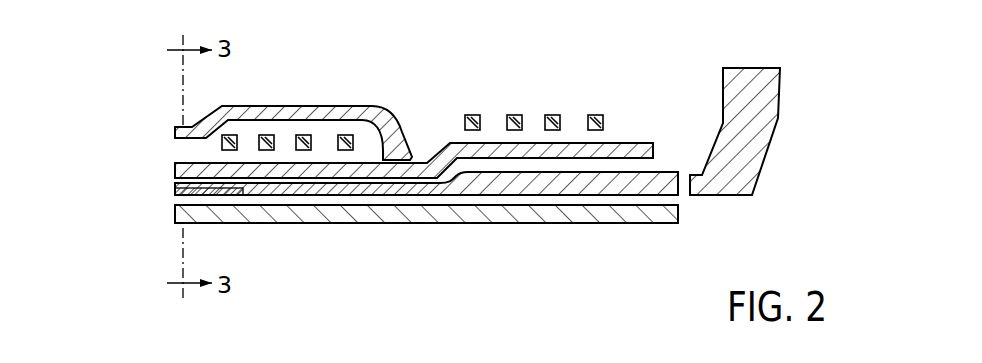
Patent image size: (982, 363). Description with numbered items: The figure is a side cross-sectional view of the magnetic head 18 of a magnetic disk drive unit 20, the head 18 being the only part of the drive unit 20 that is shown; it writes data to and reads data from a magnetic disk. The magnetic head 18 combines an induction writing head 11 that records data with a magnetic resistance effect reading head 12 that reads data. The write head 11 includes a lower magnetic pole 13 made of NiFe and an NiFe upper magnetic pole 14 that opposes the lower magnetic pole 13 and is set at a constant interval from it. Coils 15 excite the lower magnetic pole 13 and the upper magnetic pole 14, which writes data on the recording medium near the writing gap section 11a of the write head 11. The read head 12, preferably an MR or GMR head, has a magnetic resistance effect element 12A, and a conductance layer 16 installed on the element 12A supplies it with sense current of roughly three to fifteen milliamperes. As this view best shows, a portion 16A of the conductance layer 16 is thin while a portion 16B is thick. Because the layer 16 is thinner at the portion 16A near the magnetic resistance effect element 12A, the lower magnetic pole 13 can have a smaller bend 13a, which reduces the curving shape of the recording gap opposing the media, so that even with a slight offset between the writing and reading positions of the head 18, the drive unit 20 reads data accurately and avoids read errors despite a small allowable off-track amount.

The induction writing head 11 is at (172, 125).
The writing gap section 11a is at (180, 150).
The magnetic resistance effect reading head 12 is at (170, 198).
The magnetic resistance effect element 12A is at (243, 192).
The lower magnetic pole 13 is at (610, 150).
The bend of the lower magnetic pole 13a is at (450, 142).
The upper magnetic pole 14 is at (270, 108).
The coils 15 is at (307, 137).
The conductance layer 16 is at (642, 187).
The thin portion of the conductance layer 16A is at (323, 188).
The thick portion of the conductance layer 16B is at (540, 183).
The magnetic head 18 is at (695, 67).
The magnetic disk drive unit 20 is at (528, 280).